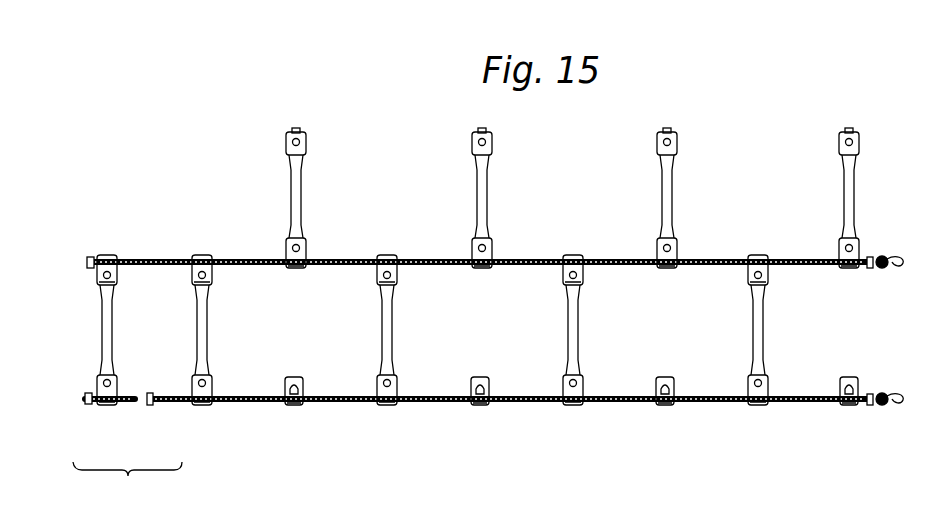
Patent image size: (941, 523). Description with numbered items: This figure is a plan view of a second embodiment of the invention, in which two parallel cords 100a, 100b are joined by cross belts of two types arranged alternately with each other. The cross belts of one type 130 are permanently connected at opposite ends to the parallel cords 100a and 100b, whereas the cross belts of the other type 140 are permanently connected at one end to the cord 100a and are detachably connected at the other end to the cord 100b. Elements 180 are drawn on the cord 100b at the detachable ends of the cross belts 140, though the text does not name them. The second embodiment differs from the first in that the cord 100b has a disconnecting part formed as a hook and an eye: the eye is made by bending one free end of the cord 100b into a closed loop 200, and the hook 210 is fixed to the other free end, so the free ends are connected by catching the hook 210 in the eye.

The parallel cord 100a is at (240, 258).
The parallel cord 100b is at (240, 403).
The cross belt of one type 130 is at (778, 319).
The cross belt of the other type 140 is at (301, 173).
The clip 180 is at (293, 405).
The closed loop 200 is at (127, 405).
The hook 210 is at (150, 405).